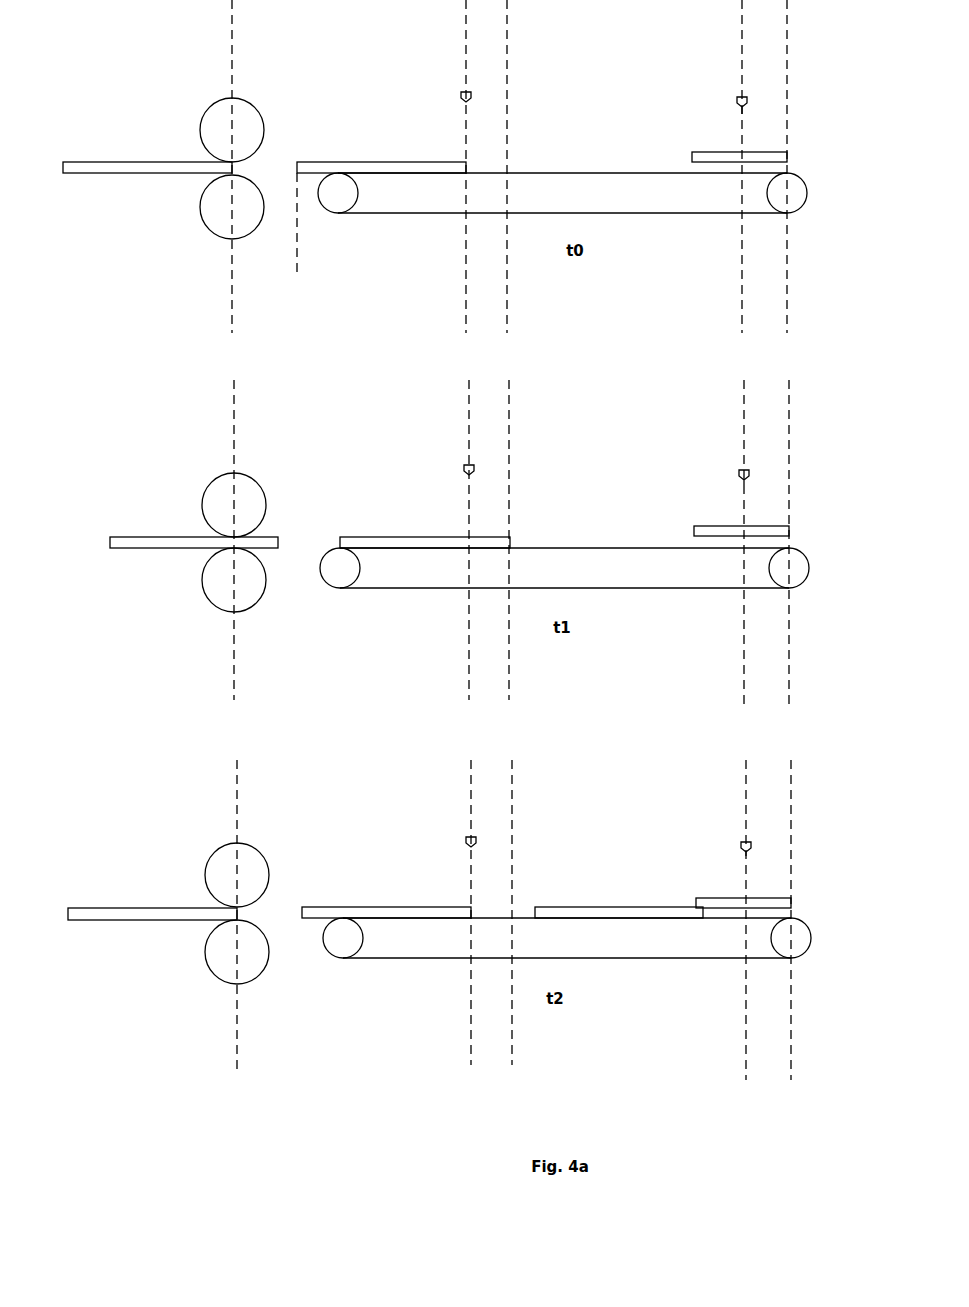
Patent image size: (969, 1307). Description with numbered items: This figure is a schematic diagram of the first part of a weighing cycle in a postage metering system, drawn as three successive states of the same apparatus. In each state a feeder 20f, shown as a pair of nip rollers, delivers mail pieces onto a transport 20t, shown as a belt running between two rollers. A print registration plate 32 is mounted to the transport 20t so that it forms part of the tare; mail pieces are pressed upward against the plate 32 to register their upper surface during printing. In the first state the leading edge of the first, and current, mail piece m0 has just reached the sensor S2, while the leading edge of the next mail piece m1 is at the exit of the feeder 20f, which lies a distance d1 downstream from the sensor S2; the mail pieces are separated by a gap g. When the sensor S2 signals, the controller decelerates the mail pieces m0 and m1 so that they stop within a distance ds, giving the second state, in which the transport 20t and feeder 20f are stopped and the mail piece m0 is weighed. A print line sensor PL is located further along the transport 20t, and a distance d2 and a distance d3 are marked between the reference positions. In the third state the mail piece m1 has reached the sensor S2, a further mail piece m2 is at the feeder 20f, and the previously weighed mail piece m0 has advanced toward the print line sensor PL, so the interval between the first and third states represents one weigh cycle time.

The feeder 20f is at (213, 470).
The transport 20t is at (615, 214).
The print registration plate 32 is at (715, 897).
The first mail piece m0 is at (383, 162).
The next mail piece m1 is at (145, 162).
The mail piece m2 is at (172, 907).
The sensor S2 is at (458, 97).
The print line sensor PL is at (736, 103).
The distance d1 is at (466, 32).
The distance d2 is at (742, 32).
The distance d3 is at (848, 123).
The stopping distance ds is at (550, 75).
The gap g is at (232, 255).